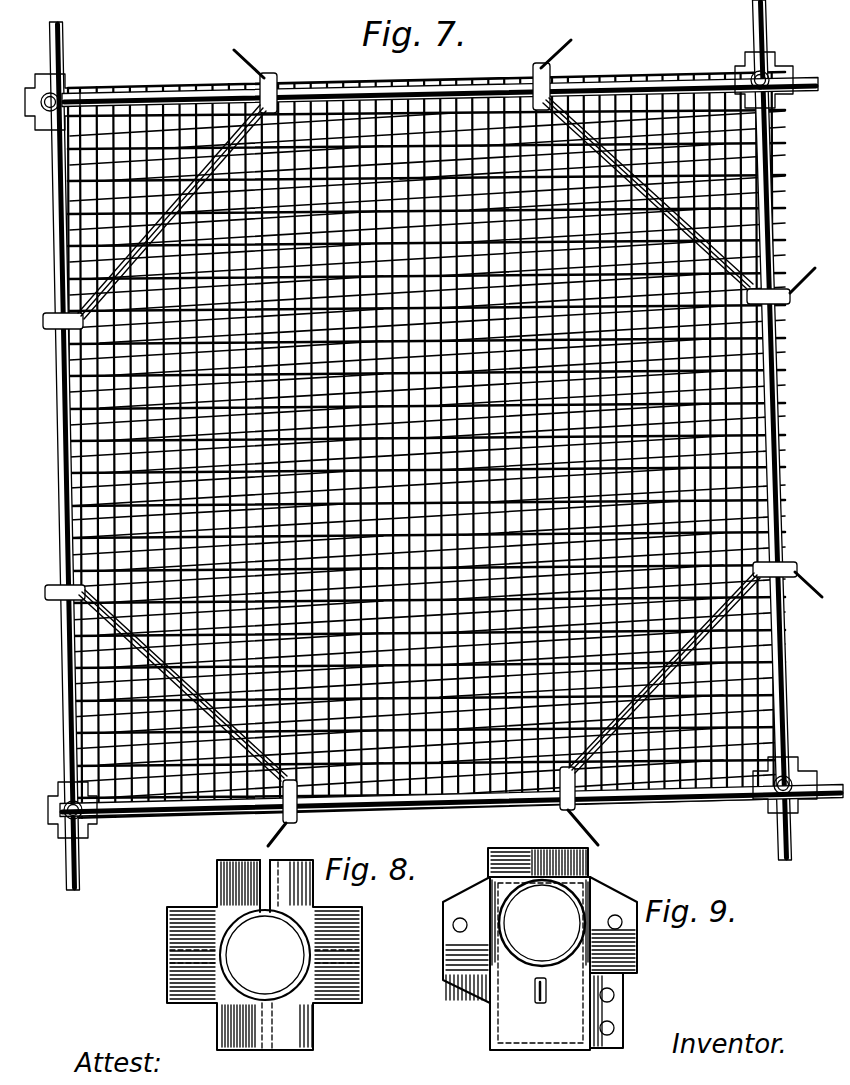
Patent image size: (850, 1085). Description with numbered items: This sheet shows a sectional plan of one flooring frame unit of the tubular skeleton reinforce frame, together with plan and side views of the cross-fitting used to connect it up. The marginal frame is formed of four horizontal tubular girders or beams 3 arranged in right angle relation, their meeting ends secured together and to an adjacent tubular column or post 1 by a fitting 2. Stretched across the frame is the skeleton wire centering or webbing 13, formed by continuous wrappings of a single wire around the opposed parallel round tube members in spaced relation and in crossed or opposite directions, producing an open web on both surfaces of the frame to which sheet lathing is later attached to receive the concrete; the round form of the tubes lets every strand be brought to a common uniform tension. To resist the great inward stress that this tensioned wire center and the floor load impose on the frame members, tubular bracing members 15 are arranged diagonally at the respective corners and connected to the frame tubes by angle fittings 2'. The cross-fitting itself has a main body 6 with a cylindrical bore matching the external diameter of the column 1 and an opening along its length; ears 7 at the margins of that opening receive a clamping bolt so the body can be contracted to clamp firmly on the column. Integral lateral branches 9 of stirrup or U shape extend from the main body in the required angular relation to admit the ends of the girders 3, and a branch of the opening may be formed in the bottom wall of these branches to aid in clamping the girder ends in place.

In FIG. 7, the tubular columns or posts 1 is at (92, 824).
In FIG. 7, the fitting 2 is at (451, 464).
In FIG. 8, the fitting 2 is at (264, 955).
In FIG. 9, the fitting 2 is at (529, 949).
In FIG. 7, the angle fittings 2' is at (425, 443).
In FIG. 7, the horizontal tubular girders or beams 3 is at (358, 96).
In FIG. 8, the main body of the fitting 6 is at (237, 934).
In FIG. 9, the main body of the fitting 6 is at (540, 857).
In FIG. 8, the ears 7 is at (276, 864).
In FIG. 9, the ears 7 is at (621, 1009).
In FIG. 8, the lateral branches 9 is at (222, 883).
In FIG. 9, the lateral branches 9 is at (451, 944).
In FIG. 7, the skeleton wire centering or webbing 13 is at (415, 120).
In FIG. 7, the tubular bracing members 15 is at (248, 56).